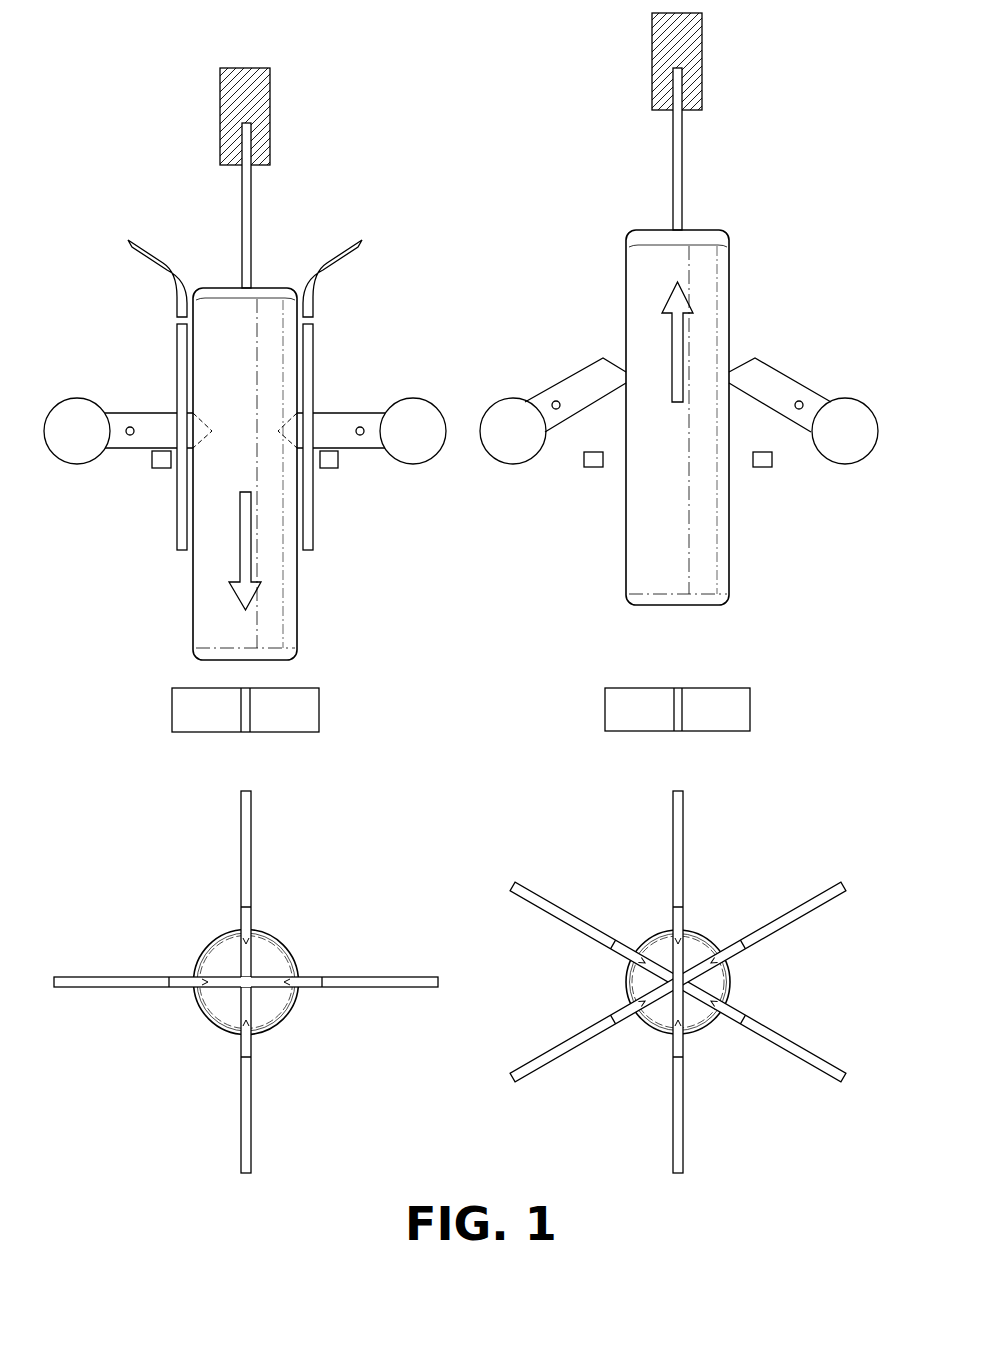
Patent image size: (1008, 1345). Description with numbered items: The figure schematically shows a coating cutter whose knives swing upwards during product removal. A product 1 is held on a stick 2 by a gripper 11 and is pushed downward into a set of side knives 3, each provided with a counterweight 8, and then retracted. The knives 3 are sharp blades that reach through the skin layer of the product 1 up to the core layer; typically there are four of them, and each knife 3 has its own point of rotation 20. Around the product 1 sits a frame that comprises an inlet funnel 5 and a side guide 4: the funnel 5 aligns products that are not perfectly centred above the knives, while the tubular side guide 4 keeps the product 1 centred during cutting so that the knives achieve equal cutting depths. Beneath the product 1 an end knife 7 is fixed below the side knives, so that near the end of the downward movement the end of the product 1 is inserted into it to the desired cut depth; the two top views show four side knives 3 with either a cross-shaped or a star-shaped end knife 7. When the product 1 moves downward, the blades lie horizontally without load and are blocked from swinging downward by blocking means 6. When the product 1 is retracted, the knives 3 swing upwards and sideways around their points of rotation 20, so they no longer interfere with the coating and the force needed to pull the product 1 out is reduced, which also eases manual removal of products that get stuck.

The product 1 is at (210, 375).
The stick 2 is at (242, 202).
The side knives 3 is at (125, 449).
The side guide 4 is at (313, 347).
The inlet funnel 5 is at (325, 274).
The blocking means 6 is at (592, 468).
The end knife 7 is at (172, 708).
The counterweight 8 is at (413, 398).
The gripper 11 is at (220, 113).
The point of rotation 20 is at (130, 427).